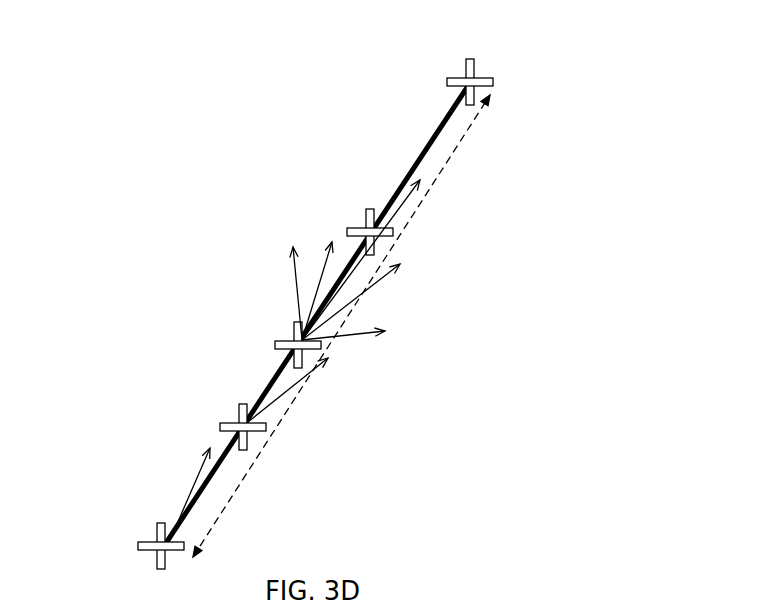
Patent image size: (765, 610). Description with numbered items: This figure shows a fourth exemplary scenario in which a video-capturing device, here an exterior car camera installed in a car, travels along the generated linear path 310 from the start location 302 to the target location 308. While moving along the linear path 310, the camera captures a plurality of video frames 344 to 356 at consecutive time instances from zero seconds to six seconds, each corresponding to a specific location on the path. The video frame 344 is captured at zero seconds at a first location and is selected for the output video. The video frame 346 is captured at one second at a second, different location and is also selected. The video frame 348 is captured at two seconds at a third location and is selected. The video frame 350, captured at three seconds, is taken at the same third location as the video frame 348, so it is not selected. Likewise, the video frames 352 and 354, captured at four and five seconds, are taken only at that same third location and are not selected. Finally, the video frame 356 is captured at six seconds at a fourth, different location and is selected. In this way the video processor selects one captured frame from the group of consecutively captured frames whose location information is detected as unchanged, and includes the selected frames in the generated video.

The start location 302 is at (153, 542).
The target location 308 is at (492, 79).
The linear path 310 is at (452, 157).
The video frame 344 is at (212, 449).
The video frame 346 is at (332, 355).
The video frame 348 is at (385, 331).
The video frame 350 is at (400, 264).
The video frame 352 is at (296, 255).
The video frame 354 is at (330, 245).
The video frame 356 is at (422, 178).